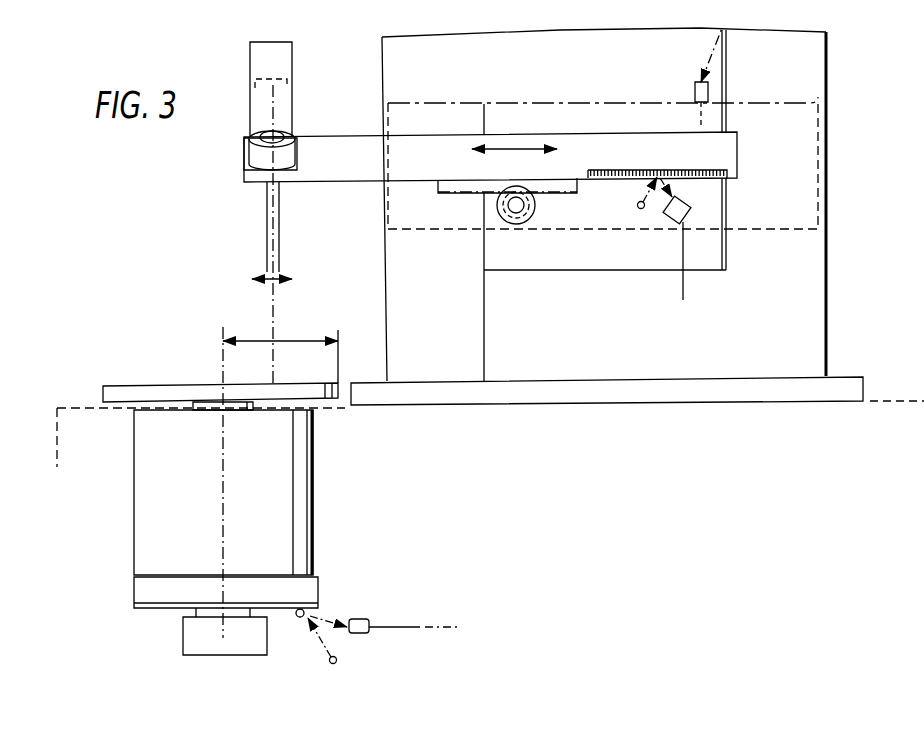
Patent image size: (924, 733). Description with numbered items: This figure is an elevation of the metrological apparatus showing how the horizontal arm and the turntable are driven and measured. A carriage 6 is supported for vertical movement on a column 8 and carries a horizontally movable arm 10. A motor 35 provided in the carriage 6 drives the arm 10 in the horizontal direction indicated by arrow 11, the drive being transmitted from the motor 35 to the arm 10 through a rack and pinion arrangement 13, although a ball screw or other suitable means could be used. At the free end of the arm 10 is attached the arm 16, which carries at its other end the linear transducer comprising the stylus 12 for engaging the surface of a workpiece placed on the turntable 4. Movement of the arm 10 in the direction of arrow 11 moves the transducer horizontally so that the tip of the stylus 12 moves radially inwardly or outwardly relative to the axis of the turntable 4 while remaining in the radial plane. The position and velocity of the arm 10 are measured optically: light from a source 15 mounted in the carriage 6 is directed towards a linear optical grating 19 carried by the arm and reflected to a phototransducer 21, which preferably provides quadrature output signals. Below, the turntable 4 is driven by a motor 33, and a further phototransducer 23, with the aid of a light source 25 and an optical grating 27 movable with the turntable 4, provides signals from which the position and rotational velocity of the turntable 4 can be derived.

The turntable 4 is at (170, 392).
The carriage 6 is at (827, 93).
The column 8 is at (800, 57).
The arm 10 is at (347, 172).
The arrow 11 is at (516, 148).
The stylus 12 is at (268, 256).
The rack and pinion arrangement 13 is at (485, 197).
The light source 15 is at (637, 206).
The arm 16 is at (284, 60).
The linear optical grating 19 is at (678, 171).
The phototransducer 21 is at (684, 201).
The phototransducer 23 is at (360, 619).
The light source 25 is at (337, 662).
The optical grating 27 is at (309, 612).
The motor 33 is at (252, 632).
The motor 35 is at (537, 204).